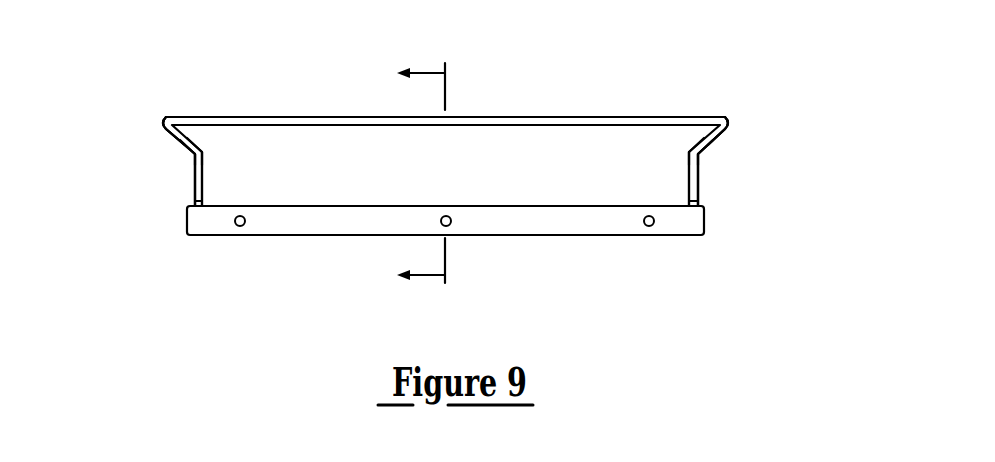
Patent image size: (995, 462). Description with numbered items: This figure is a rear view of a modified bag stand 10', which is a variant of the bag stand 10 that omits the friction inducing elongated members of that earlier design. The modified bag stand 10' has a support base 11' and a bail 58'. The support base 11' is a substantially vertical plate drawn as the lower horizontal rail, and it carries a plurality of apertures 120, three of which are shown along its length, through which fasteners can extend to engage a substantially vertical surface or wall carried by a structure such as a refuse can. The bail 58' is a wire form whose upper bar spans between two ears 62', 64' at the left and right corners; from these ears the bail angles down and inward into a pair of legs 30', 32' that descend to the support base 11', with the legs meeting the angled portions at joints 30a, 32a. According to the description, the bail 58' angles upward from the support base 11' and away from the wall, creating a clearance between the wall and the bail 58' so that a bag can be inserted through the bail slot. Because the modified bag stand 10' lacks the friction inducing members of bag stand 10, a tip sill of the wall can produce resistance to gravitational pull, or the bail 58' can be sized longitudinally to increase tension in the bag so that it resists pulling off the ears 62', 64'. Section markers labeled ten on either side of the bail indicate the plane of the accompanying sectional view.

The modified bag stand 10' is at (501, 116).
The bail 58' is at (445, 109).
The ear 62' is at (127, 102).
The ear 64' is at (722, 86).
The left leg 30' is at (130, 179).
The right leg 32' is at (753, 179).
The left leg upper joint 30a is at (197, 153).
The right leg upper joint 32a is at (689, 153).
The support base 11' is at (445, 271).
The apertures 120 is at (240, 227).
The bag stand 10 is at (445, 175).